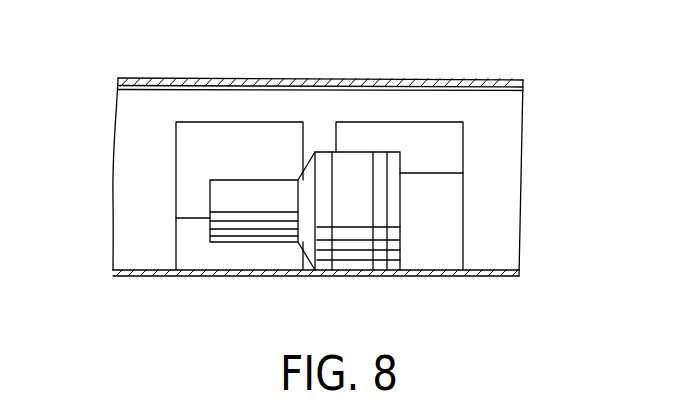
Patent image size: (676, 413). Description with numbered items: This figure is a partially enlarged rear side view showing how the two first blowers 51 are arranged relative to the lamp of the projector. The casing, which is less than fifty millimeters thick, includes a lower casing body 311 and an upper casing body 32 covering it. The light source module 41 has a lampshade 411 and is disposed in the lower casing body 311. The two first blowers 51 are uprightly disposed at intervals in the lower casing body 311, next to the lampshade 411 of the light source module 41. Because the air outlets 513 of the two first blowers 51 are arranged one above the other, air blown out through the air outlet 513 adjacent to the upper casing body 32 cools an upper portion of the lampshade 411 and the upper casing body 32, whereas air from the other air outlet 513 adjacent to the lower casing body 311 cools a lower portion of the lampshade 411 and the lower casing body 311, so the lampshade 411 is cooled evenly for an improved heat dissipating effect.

The upper casing body 32 is at (505, 78).
The lower casing body 311 is at (447, 277).
The first blower 51 is at (229, 121).
The air outlet 513 is at (200, 253).
The light source module 41 is at (317, 147).
The lampshade 411 is at (358, 151).